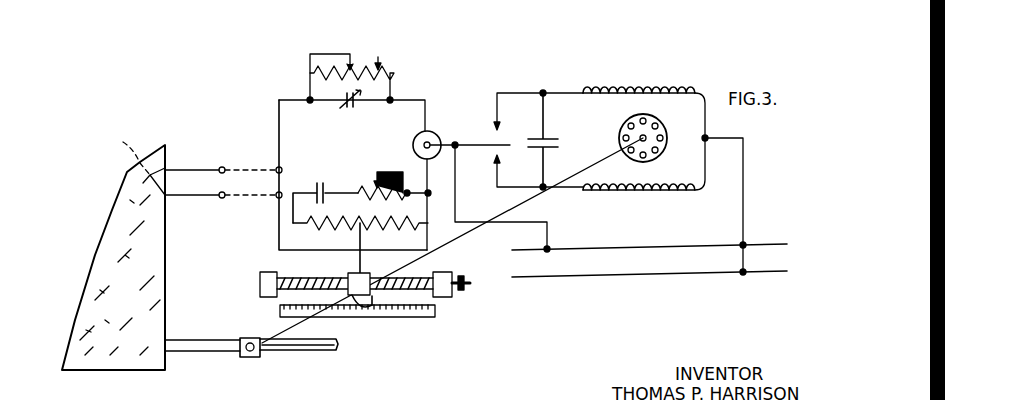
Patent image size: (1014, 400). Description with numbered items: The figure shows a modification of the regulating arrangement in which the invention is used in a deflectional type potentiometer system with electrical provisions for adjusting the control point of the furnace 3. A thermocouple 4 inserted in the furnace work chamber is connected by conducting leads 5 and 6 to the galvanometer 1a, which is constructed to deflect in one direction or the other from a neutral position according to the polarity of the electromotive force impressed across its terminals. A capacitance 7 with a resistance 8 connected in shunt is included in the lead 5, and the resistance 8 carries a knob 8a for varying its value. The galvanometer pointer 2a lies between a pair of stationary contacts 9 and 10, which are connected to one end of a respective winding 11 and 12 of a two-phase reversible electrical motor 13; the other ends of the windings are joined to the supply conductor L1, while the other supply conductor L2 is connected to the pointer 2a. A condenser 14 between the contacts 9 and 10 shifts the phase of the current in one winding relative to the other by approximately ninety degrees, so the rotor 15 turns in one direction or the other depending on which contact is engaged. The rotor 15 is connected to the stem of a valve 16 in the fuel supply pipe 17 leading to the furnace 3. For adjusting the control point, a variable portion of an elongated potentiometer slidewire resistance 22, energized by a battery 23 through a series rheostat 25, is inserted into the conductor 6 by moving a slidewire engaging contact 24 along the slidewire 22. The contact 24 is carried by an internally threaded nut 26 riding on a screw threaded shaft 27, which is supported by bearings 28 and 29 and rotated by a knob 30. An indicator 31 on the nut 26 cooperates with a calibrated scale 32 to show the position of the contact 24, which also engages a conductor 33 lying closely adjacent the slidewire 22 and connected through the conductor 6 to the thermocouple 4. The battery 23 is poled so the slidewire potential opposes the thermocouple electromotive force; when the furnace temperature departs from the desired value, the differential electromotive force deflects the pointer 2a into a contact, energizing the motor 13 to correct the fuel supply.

The galvanometer 1a is at (430, 131).
The galvanometer pointer 2a is at (472, 145).
The furnace 3 is at (165, 280).
The thermocouple 4 is at (136, 163).
The conducting lead 5 is at (200, 170).
The conducting lead 6 is at (200, 195).
The capacitance 7 is at (350, 108).
The resistance 8 is at (310, 86).
The knob 8a is at (378, 57).
The stationary contact 9 is at (499, 126).
The stationary contact 10 is at (498, 158).
The motor winding 11 is at (630, 84).
The motor winding 12 is at (643, 197).
The two-phase reversible electrical motor 13 is at (620, 128).
The condenser 14 is at (560, 142).
The rotor 15 is at (665, 128).
The valve 16 is at (242, 342).
The fuel supply pipe 17 is at (306, 350).
The potentiometer slidewire resistance 22 is at (378, 226).
The battery 23 is at (321, 183).
The slidewire engaging contact 24 is at (358, 246).
The rheostat 25 is at (370, 188).
The internally threaded nut 26 is at (348, 276).
The screw threaded shaft 27 is at (410, 272).
The bearing 28 is at (262, 272).
The bearing 29 is at (447, 297).
The knob 30 is at (470, 284).
The indicator 31 is at (368, 310).
The calibrated scale 32 is at (420, 317).
The conductor 33 is at (432, 243).
The supply conductor L1 is at (577, 277).
The supply conductor L2 is at (575, 249).